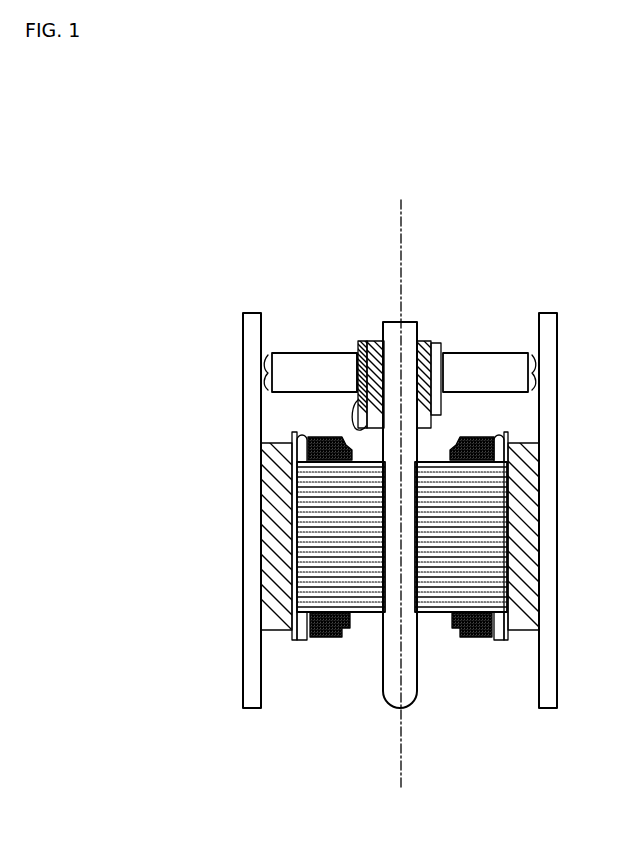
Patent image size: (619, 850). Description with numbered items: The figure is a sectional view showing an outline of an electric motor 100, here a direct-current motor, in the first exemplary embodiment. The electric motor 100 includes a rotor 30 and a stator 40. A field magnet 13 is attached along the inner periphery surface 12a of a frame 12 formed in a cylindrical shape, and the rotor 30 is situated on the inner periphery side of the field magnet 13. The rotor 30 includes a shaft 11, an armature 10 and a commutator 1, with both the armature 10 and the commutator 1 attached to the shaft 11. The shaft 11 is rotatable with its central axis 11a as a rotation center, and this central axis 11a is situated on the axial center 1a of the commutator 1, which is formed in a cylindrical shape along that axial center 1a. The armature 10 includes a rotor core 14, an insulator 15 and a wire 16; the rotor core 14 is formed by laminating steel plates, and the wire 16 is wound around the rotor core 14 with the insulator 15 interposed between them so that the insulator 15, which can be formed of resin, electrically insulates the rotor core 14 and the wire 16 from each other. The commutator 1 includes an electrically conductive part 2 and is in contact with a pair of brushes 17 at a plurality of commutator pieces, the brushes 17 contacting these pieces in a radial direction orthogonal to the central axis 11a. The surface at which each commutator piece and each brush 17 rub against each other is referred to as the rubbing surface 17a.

The electric motor 100 is at (240, 233).
The axial center 1a is at (401, 222).
The central axis 11a is at (444, 475).
The commutator 1 is at (378, 342).
The electrically conductive part 2 is at (358, 338).
The shaft 11 is at (409, 333).
The brushes 17 is at (487, 370).
The rubbing surface 17a is at (357, 370).
The frame 12 is at (252, 343).
The inner periphery surface 12a is at (259, 418).
The field magnet 13 is at (334, 525).
The stator 40 is at (272, 493).
The rotor core 14 is at (330, 568).
The insulator 15 is at (301, 638).
The wire 16 is at (318, 636).
The armature 10 is at (163, 580).
The rotor 30 is at (305, 502).